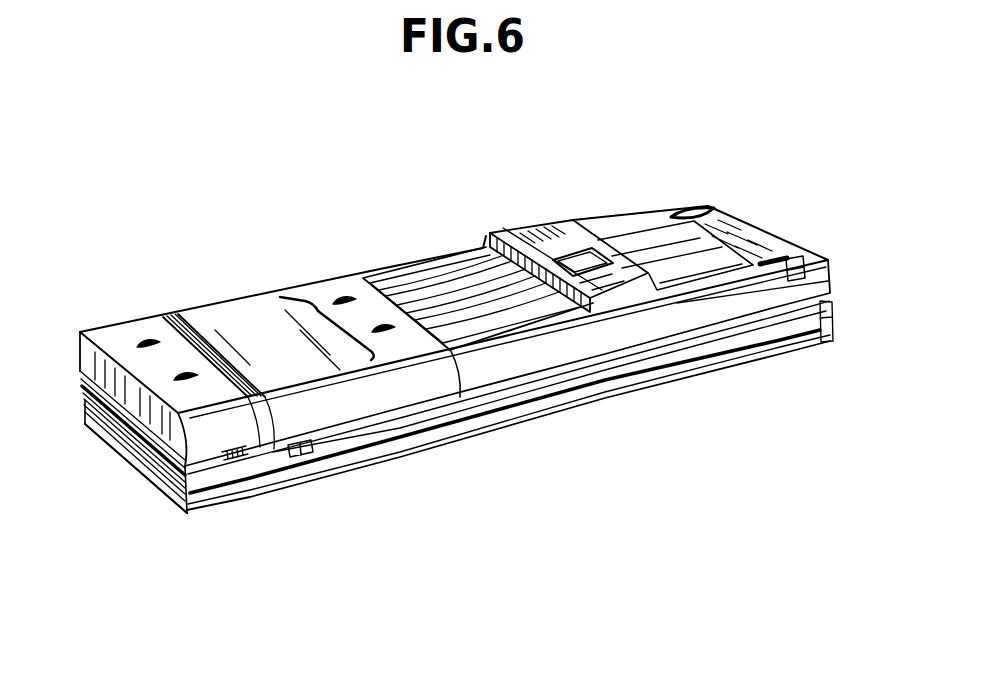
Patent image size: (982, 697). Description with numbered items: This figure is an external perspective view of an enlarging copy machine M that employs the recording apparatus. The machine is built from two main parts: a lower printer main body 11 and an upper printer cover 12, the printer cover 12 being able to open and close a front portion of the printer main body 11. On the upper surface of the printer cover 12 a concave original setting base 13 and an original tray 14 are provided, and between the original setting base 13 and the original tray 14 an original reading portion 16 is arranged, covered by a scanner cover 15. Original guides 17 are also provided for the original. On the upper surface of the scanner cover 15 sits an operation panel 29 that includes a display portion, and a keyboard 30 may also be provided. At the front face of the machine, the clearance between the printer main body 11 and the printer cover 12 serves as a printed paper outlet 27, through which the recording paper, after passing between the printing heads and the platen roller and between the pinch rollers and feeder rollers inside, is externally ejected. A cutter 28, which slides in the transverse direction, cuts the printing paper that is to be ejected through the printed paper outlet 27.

The enlarging copy machine M is at (370, 210).
The printer main body 11 is at (158, 490).
The printer cover 12 is at (225, 300).
The original setting base 13 is at (652, 237).
The original tray 14 is at (450, 283).
The scanner cover 15 is at (542, 212).
The original reading portion 16 is at (487, 232).
The original guide 17 is at (692, 210).
The printed paper outlet 27 is at (513, 403).
The cutter 28 is at (312, 456).
The operation panel 29 is at (647, 277).
The keyboard 30 is at (603, 283).